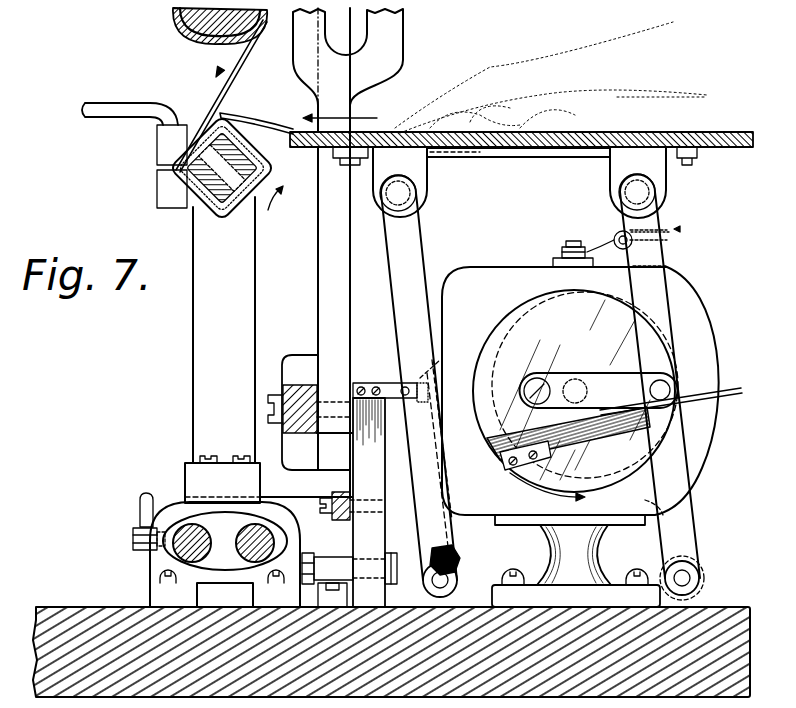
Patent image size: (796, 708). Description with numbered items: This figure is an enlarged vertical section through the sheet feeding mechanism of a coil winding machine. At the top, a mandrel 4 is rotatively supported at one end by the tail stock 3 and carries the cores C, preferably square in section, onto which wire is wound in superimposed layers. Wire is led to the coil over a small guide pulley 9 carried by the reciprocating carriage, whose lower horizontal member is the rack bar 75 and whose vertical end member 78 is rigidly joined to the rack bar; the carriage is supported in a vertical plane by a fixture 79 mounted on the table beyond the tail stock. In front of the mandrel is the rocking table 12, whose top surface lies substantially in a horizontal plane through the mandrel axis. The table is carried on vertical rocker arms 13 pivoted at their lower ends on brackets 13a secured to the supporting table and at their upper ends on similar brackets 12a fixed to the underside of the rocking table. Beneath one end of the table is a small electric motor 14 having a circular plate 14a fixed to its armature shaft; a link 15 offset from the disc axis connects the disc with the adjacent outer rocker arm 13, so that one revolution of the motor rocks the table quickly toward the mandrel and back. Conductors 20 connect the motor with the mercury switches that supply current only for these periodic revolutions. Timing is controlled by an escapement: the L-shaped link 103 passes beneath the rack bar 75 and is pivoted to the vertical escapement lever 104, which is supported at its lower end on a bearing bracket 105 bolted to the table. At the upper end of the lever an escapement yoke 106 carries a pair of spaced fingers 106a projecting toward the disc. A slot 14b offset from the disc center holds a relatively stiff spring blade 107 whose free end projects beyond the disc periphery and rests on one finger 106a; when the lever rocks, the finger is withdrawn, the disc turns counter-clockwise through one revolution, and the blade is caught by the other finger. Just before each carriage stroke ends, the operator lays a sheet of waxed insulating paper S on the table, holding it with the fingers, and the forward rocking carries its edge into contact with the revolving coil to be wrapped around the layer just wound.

The tail stock 3 is at (157, 157).
The mandrel 4 is at (272, 163).
The guide pulley 9 is at (187, 20).
The rocking table 12 is at (643, 133).
The bracket 12a is at (420, 177).
The rocker arm 13 is at (412, 252).
The bracket 13a is at (461, 569).
The electric motor 14 is at (693, 313).
The circular plate 14a is at (523, 322).
The slot 14b is at (597, 448).
The link 15 is at (593, 378).
The conductor 20 is at (680, 228).
The rack bar 75 is at (309, 412).
The end member 78 is at (337, 24).
The fixture 79 is at (395, 42).
The L-shaped link 103 is at (325, 515).
The escapement lever 104 is at (372, 520).
The bearing bracket 105 is at (334, 596).
The escapement yoke 106 is at (395, 383).
The escapement finger 106a is at (451, 450).
The spring blade 107 is at (694, 413).
The core C is at (213, 223).
The insulating paper sheet S is at (256, 113).